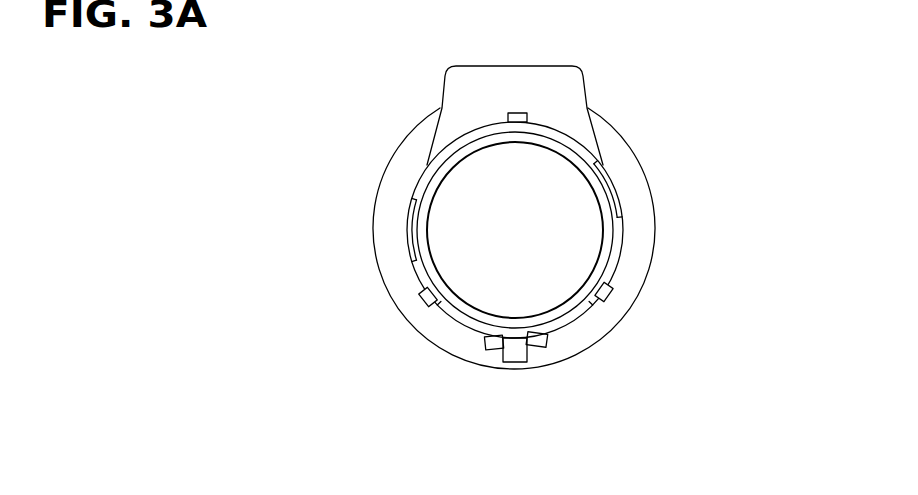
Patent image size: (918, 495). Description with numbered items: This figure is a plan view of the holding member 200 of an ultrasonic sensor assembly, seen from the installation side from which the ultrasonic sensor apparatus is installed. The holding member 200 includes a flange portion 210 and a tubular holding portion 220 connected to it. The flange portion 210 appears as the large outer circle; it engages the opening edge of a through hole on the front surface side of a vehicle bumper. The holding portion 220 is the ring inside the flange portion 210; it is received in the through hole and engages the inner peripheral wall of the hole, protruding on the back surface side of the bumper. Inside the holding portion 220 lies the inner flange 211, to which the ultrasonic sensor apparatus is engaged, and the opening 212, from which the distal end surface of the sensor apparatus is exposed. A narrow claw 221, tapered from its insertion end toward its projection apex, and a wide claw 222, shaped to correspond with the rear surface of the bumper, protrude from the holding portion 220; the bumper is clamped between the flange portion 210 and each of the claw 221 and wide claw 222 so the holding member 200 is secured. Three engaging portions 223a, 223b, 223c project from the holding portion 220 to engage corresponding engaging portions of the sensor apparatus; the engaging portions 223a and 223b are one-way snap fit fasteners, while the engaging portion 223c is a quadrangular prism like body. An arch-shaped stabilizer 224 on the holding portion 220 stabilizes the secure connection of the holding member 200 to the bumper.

The holding member 200 is at (672, 120).
The flange portion 210 is at (643, 238).
The inner flange 211 is at (427, 243).
The opening 212 is at (557, 252).
The tubular holding portion 220 is at (417, 198).
The claw 221 is at (515, 348).
The wide claw 222 is at (547, 87).
The engaging portion 223a is at (612, 291).
The engaging portion 223b is at (420, 295).
The engaging portion 223c is at (517, 113).
The arch-shaped stabilizer 224 is at (548, 337).